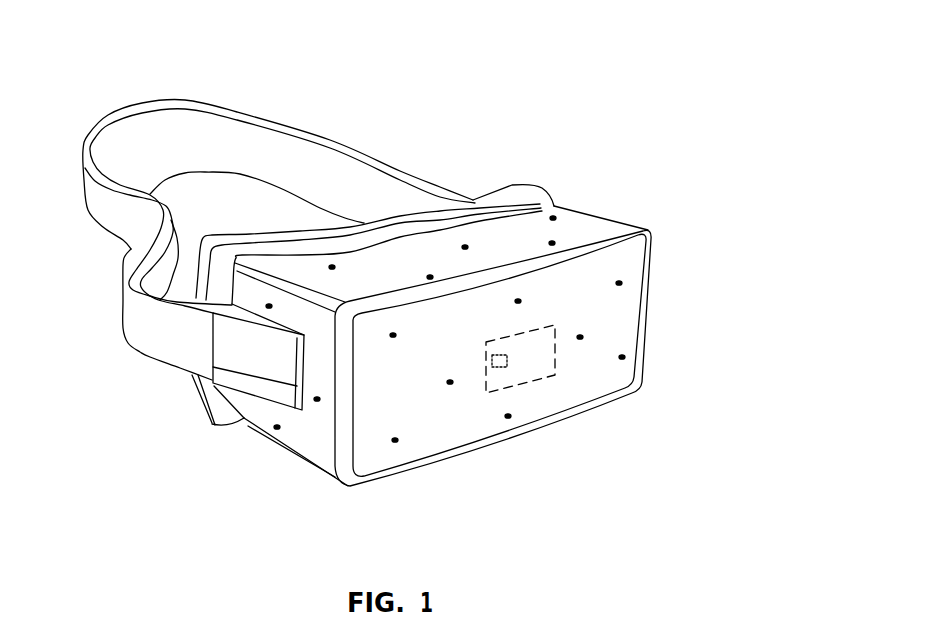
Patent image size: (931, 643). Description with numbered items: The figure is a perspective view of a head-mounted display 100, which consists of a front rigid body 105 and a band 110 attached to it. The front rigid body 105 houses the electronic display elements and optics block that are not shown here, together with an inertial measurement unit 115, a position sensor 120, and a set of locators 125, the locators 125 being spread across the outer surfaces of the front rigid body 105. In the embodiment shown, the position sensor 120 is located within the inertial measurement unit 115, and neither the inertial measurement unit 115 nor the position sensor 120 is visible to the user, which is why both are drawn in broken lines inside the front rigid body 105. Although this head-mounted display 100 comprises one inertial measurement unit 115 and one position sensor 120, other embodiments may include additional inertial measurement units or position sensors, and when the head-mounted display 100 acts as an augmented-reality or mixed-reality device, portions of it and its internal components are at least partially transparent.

The head-mounted display 100 is at (58, 35).
The front rigid body 105 is at (645, 229).
The band 110 is at (364, 157).
The inertial measurement unit 115 is at (557, 380).
The position sensor 120 is at (501, 367).
The locators 125 is at (581, 337).